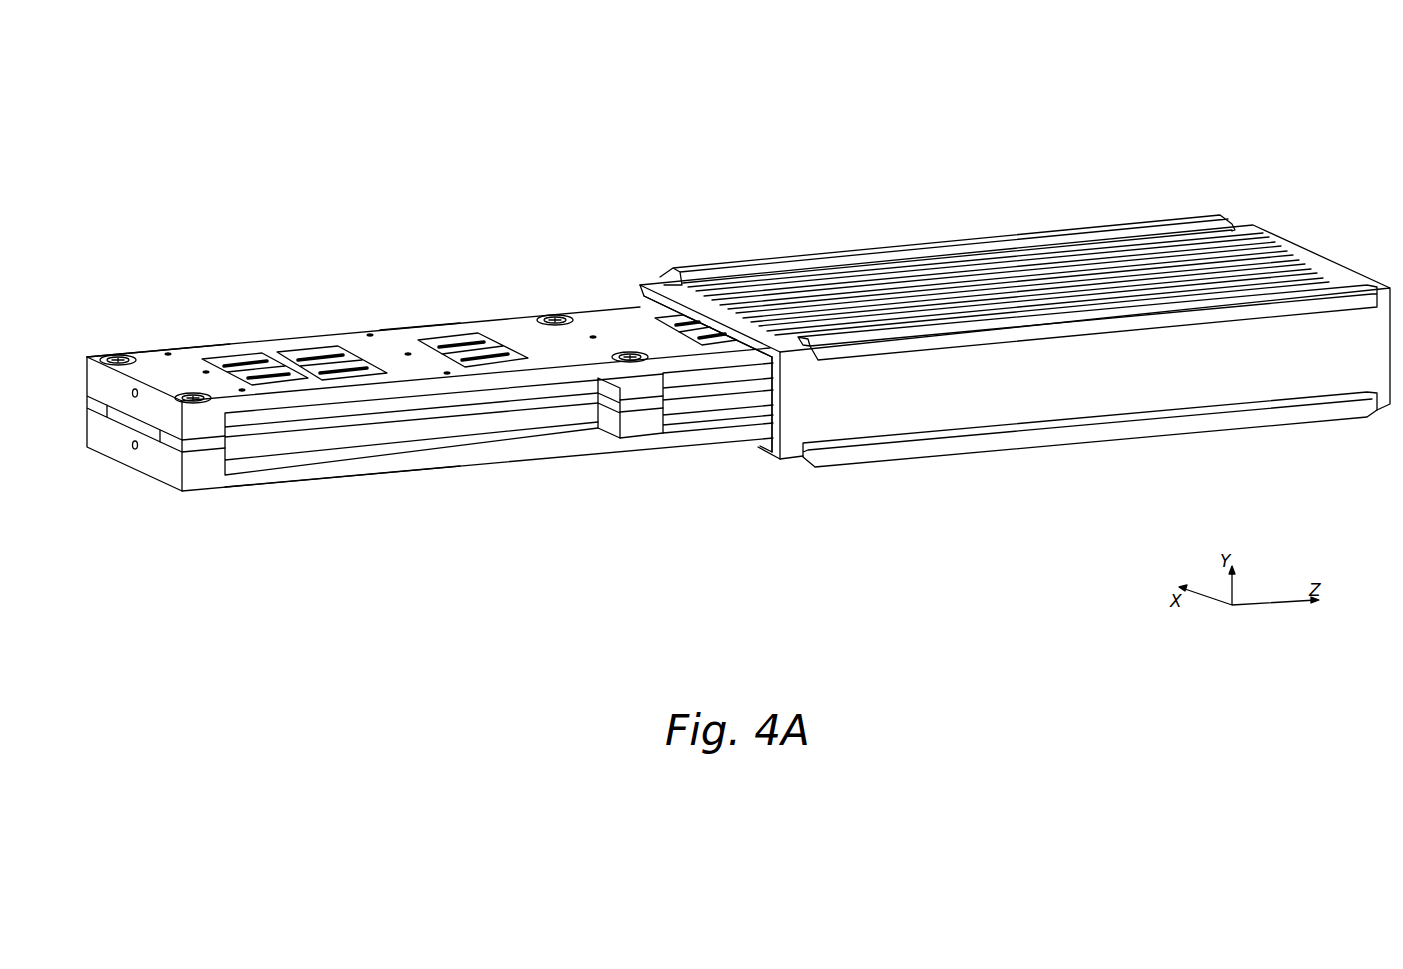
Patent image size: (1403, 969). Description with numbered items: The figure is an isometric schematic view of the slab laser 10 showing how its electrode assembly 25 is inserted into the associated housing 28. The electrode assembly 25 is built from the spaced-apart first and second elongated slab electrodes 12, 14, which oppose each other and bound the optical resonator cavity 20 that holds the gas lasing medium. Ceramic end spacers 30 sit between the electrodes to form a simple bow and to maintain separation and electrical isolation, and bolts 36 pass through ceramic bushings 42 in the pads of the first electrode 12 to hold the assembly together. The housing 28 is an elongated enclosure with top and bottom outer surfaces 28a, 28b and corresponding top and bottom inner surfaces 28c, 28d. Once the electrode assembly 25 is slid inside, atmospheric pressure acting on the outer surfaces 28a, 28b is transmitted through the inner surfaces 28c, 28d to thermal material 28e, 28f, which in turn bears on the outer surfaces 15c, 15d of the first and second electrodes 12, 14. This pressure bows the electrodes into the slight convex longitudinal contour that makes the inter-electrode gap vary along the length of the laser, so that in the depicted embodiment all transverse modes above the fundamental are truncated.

The slab laser 10 is at (598, 113).
The first elongated slab electrode 12 is at (267, 346).
The second elongated slab electrode 14 is at (508, 465).
The outer surface of the first electrode 15c is at (205, 352).
The outer surface of the second electrode 15d is at (339, 480).
The optical resonator cavity 20 is at (137, 424).
The electrode assembly 25 is at (434, 306).
The housing 28 is at (1040, 253).
The top outer surface of the housing 28a is at (817, 277).
The bottom outer surface of the housing 28b is at (1080, 445).
The top inner surface of the housing 28c is at (768, 355).
The bottom inner surface of the housing 28d is at (768, 447).
The thermal material 28e is at (238, 356).
The thermal material 28f is at (204, 373).
The end spacers 30 is at (641, 407).
The bolts 36 is at (133, 358).
The ceramic bushings 42 is at (118, 355).